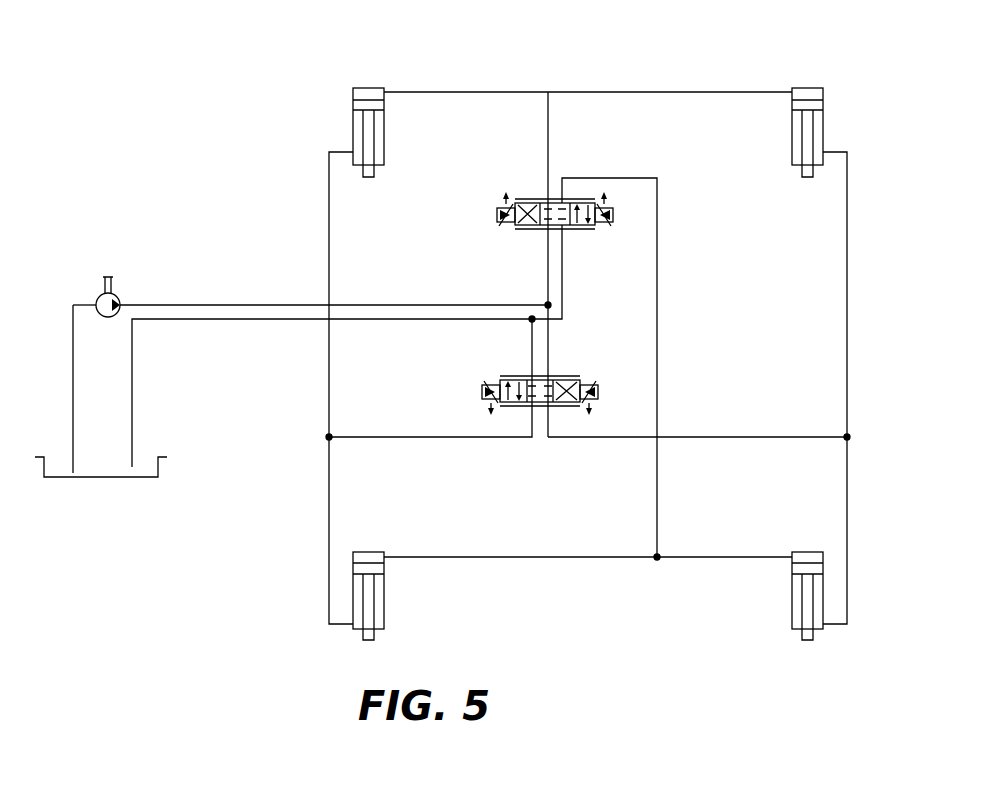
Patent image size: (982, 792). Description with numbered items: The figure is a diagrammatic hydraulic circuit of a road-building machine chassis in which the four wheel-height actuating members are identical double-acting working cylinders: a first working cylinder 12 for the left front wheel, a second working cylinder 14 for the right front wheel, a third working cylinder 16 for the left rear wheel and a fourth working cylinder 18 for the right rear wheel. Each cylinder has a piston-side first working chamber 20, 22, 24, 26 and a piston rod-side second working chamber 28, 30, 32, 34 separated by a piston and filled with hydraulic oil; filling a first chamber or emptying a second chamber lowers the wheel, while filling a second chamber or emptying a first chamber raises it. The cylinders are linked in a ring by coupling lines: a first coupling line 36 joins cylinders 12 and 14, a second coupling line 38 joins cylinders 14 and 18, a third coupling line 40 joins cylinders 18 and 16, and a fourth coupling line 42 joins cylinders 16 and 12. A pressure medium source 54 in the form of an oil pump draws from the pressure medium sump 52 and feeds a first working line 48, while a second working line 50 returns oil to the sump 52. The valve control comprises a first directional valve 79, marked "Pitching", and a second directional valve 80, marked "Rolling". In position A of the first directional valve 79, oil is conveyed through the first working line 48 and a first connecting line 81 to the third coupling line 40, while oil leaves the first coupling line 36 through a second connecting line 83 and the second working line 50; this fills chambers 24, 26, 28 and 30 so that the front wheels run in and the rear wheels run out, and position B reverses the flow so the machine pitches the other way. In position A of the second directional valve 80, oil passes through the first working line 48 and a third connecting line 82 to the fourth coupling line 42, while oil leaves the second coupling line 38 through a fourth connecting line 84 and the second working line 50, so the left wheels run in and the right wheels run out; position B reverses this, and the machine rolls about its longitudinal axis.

The first working cylinder 12 is at (365, 108).
The second working cylinder 14 is at (781, 119).
The third working cylinder 16 is at (412, 581).
The fourth working cylinder 18 is at (763, 581).
The first working chamber 20 is at (356, 96).
The first working chamber 22 is at (803, 92).
The first working chamber 24 is at (364, 553).
The first working chamber 26 is at (803, 553).
The second working chamber 28 is at (378, 148).
The second working chamber 30 is at (795, 148).
The second working chamber 32 is at (380, 617).
The second working chamber 34 is at (797, 617).
The first coupling line 36 is at (632, 92).
The second coupling line 38 is at (847, 345).
The third coupling line 40 is at (688, 557).
The fourth coupling line 42 is at (329, 388).
The first working line 48 is at (205, 305).
The second working line 50 is at (225, 320).
The reservoir tank 52 is at (100, 477).
The pressure medium source 54 is at (123, 278).
The first directional valve 79 is at (587, 194).
The second directional valve 80 is at (572, 372).
The first connecting line 81 is at (657, 200).
The third connecting line 82 is at (440, 437).
The second connecting line 83 is at (549, 134).
The fourth connecting line 84 is at (747, 437).